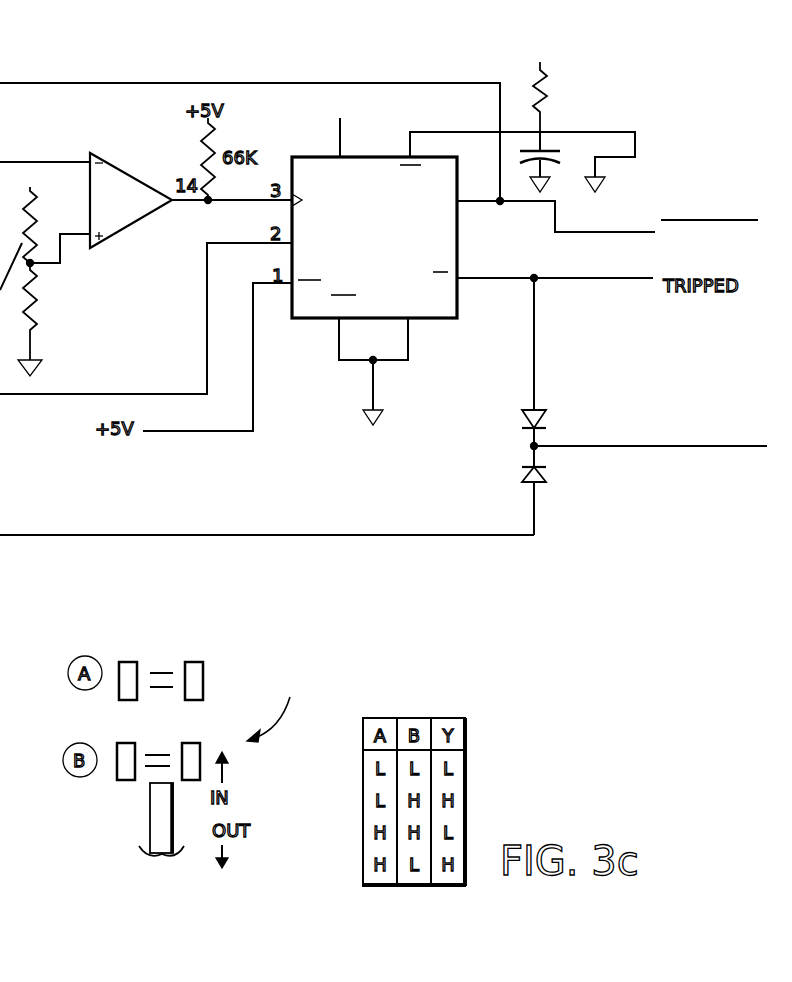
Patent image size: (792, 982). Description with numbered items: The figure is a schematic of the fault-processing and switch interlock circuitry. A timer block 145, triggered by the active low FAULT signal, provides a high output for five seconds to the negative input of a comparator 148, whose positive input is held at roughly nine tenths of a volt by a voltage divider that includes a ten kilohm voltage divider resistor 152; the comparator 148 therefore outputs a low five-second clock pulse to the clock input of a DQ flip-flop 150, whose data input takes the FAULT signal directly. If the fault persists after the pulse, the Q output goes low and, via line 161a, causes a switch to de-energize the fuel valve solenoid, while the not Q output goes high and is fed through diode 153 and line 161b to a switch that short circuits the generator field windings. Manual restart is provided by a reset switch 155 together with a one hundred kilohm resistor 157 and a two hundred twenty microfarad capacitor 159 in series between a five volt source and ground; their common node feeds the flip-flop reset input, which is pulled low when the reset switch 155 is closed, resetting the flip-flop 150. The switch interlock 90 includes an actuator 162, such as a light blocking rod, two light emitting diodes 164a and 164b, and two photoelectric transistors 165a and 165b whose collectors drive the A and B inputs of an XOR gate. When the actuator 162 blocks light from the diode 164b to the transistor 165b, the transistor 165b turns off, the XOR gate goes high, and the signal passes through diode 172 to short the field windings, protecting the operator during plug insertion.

The timer block 145 is at (0, 124).
The comparator 148 is at (106, 160).
The voltage divider resistor 152 is at (38, 318).
The DQ flip-flop 150 is at (457, 320).
The resistor 157 is at (548, 84).
The reset switch 155 is at (602, 131).
The capacitor 159 is at (549, 167).
The line 161a is at (611, 216).
The line 161b is at (598, 445).
The diode 153 is at (547, 415).
The diode 172 is at (546, 470).
The light emitting diode 164a is at (126, 662).
The photoelectric transistor 165a is at (200, 663).
The light emitting diode 164b is at (123, 743).
The photoelectric transistor 165b is at (230, 727).
The switch interlock 90 is at (273, 706).
The actuator 162 is at (148, 820).